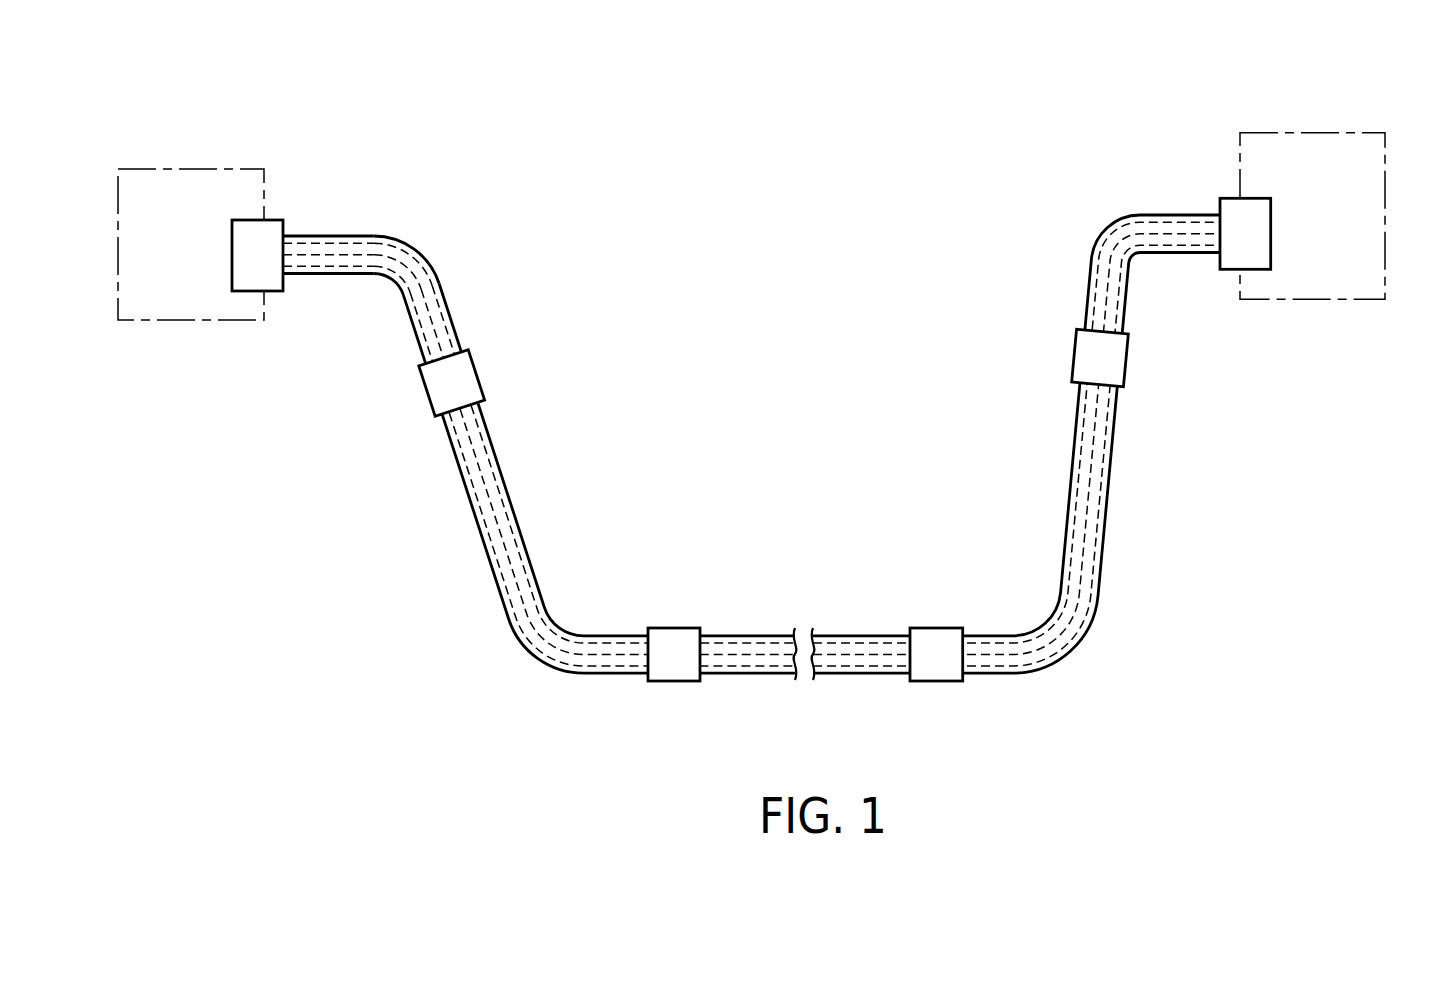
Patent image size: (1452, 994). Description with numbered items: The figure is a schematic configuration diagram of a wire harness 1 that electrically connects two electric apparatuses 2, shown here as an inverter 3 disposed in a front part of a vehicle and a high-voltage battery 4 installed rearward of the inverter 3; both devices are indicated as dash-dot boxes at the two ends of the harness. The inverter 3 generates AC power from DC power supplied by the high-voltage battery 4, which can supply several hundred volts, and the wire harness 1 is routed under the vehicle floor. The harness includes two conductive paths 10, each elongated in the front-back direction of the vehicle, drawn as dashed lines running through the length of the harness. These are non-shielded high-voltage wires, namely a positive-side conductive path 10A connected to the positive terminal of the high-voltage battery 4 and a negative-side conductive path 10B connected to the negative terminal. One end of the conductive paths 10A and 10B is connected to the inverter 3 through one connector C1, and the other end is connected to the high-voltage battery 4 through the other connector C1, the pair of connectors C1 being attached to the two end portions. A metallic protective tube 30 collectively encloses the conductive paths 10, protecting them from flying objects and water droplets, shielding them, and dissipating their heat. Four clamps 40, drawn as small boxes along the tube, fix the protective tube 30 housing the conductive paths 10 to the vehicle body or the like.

The wire harness 1 is at (1205, 133).
The electric apparatus 2 is at (775, 179).
The inverter 3 is at (215, 168).
The high-voltage battery 4 is at (1360, 132).
The conductive path 10 is at (751, 437).
The positive-side conductive path 10A is at (501, 490).
The negative-side conductive path 10B is at (500, 522).
The protective tube 30 is at (412, 248).
The clamp 40 is at (481, 373).
The connector C1 is at (270, 218).